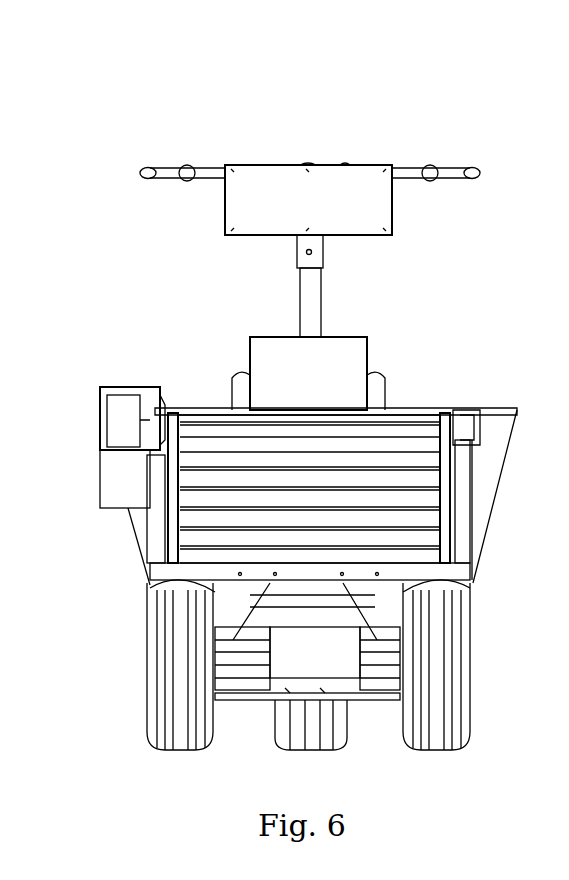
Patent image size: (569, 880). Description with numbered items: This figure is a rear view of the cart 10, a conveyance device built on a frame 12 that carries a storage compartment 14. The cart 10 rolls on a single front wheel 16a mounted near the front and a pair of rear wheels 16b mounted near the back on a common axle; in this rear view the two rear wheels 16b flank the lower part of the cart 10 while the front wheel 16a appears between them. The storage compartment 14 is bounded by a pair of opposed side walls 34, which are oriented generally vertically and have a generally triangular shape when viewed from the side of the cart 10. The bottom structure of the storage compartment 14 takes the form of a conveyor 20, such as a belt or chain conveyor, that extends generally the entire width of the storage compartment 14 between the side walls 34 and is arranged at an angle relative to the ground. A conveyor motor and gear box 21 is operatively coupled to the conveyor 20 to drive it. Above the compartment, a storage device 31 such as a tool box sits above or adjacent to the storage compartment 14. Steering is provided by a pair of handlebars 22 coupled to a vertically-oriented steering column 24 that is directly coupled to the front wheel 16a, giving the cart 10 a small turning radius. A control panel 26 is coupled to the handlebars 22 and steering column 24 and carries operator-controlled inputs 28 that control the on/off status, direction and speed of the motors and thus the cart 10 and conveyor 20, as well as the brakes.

The cart 10 is at (418, 115).
The frame 12 is at (230, 700).
The storage compartment 14 is at (478, 368).
The front wheel 16a is at (322, 745).
The rear wheels 16b is at (178, 745).
The conveyor 20 is at (212, 455).
The conveyor motor and gear box 21 is at (100, 490).
The handlebars 22 is at (165, 173).
The steering column 24 is at (297, 292).
The control panel 26 is at (258, 165).
The inputs 28 is at (322, 152).
The storage device 31 is at (335, 362).
The side walls 34 is at (135, 548).